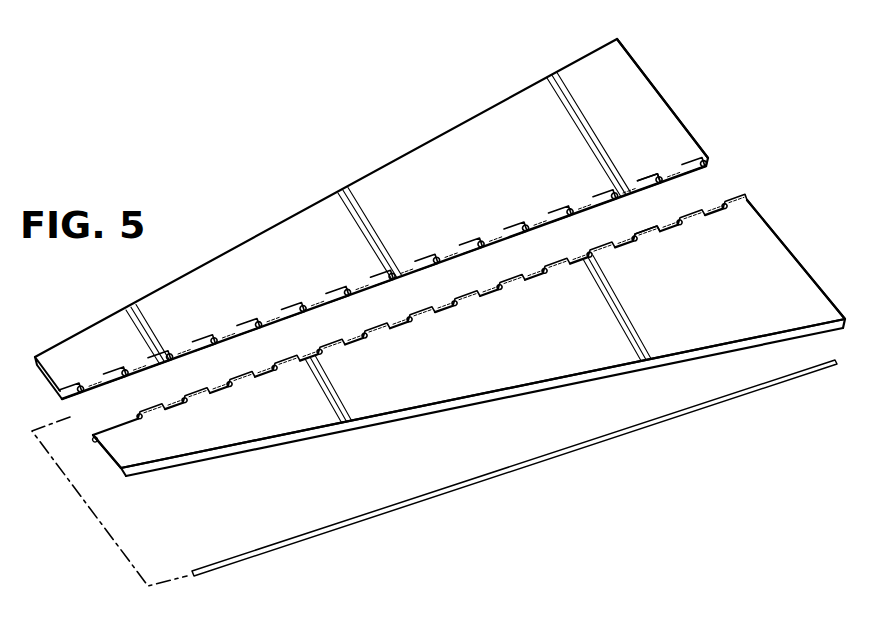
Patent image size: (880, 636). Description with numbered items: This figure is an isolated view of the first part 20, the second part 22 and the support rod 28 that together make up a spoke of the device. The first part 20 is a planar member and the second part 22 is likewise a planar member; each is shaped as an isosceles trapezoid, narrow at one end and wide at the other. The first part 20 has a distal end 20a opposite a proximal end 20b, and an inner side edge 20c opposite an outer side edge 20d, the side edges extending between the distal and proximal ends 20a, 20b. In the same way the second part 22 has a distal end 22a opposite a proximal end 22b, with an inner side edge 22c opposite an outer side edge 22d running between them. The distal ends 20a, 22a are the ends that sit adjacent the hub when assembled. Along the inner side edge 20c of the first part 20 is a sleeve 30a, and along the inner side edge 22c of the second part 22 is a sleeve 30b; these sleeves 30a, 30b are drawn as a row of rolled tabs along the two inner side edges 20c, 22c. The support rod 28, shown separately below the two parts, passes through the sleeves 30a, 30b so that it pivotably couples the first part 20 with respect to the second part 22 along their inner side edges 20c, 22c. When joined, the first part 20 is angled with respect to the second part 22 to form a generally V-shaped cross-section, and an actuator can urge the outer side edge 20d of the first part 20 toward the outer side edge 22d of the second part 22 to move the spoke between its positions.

The first part 20 is at (763, 233).
The distal end of the first part 20a is at (107, 461).
The proximal end of the first part 20b is at (806, 268).
The inner side edge of the first part 20c is at (398, 326).
The outer side edge of the first part 20d is at (441, 412).
The second part 22 is at (653, 102).
The distal end of the second part 22a is at (46, 386).
The proximal end of the second part 22b is at (637, 62).
The inner side edge of the second part 22c is at (490, 243).
The outer side edge of the second part 22d is at (357, 193).
The support rod 28 is at (585, 450).
The sleeve of the first part 30a is at (594, 210).
The sleeve of the second part 30b is at (655, 228).